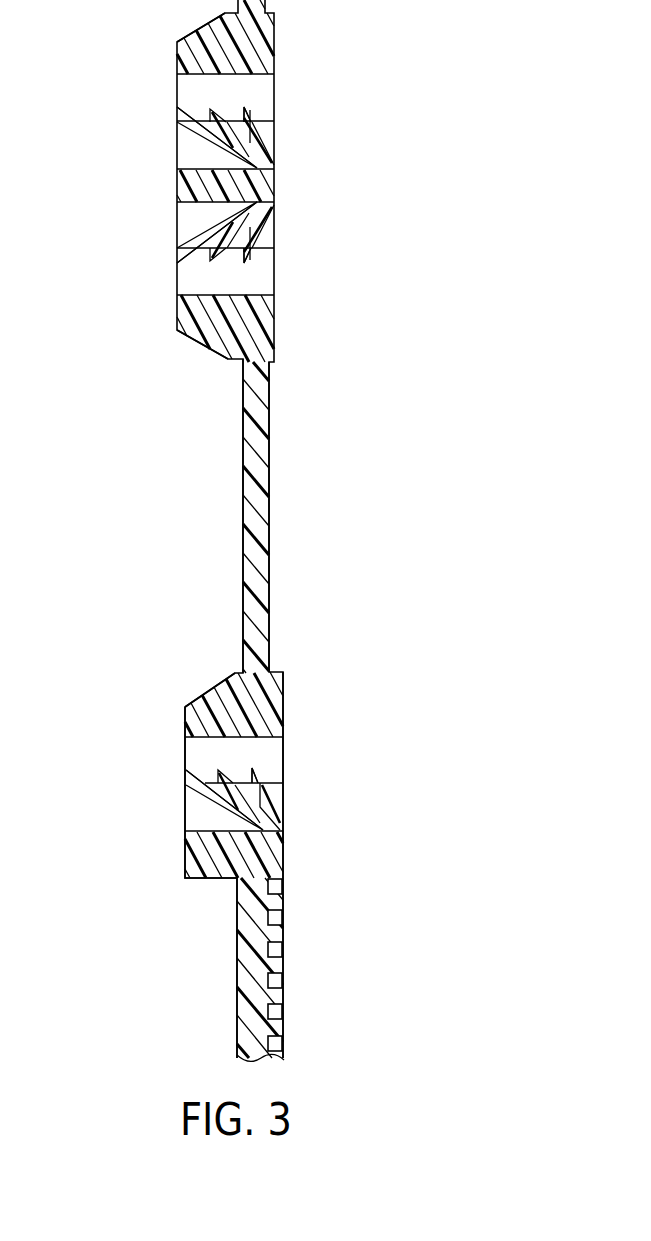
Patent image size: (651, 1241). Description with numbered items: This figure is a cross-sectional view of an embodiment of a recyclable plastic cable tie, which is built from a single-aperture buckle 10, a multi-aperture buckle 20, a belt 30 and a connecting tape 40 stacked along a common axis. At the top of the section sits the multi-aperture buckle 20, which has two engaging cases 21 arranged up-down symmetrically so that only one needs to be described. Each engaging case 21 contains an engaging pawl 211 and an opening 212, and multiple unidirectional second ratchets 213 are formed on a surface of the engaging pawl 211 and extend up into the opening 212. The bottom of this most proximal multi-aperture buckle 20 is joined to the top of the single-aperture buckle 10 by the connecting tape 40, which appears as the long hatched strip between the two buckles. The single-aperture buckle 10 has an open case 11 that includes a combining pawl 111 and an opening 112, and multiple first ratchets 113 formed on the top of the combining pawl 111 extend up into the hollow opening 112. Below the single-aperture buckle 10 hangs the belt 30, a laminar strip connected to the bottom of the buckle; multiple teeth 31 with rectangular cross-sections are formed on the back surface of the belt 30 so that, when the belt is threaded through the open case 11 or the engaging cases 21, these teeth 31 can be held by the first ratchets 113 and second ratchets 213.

The single-aperture buckle 10 is at (157, 878).
The open case 11 is at (182, 764).
The combining pawl 111 is at (220, 790).
The opening 112 is at (185, 752).
The first ratchets 113 is at (260, 768).
The multi-aperture buckle 20 is at (158, 182).
The engaging case 21 is at (168, 85).
The engaging pawl 211 is at (239, 143).
The opening 212 is at (273, 76).
The second ratchets 213 is at (245, 114).
The belt 30 is at (248, 990).
The teeth 31 is at (284, 965).
The connecting tape 40 is at (260, 477).